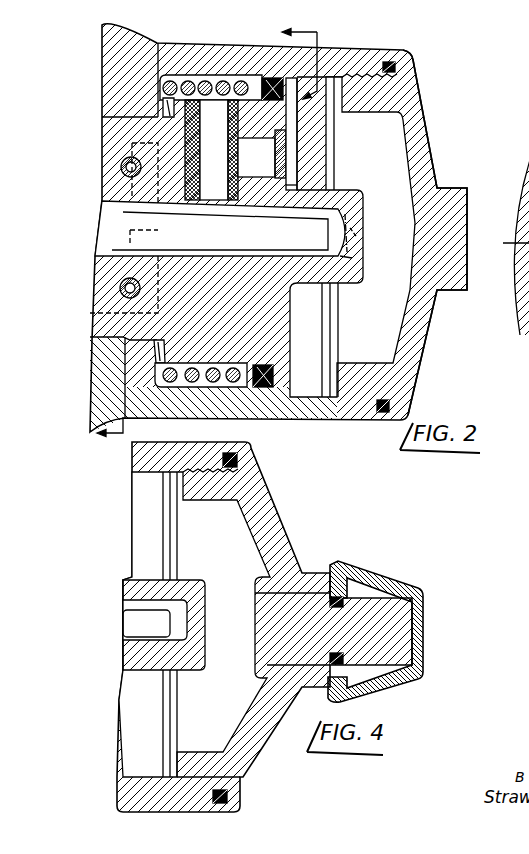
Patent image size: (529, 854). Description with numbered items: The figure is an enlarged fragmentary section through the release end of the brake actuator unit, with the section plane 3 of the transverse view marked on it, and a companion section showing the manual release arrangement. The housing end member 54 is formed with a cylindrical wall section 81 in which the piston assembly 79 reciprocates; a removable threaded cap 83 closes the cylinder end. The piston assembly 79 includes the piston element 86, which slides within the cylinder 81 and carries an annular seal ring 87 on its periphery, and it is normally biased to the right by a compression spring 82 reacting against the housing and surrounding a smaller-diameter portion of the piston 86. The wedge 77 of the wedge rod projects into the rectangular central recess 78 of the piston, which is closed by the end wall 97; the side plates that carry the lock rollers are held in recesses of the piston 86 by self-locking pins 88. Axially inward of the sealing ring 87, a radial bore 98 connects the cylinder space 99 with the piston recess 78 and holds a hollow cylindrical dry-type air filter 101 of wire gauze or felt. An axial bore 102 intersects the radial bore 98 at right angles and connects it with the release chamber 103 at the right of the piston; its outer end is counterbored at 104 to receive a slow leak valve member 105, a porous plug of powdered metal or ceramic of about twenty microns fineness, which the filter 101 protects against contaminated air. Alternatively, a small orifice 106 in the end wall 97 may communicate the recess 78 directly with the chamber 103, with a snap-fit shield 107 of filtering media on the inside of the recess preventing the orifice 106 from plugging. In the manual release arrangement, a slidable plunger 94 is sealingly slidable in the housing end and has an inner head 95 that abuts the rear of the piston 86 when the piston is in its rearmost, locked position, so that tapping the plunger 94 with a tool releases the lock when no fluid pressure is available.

In FIG. 2, the housing end member 54 is at (113, 37).
In FIG. 2, the wedge 77 is at (218, 239).
In FIG. 4, the wedge 77 is at (162, 623).
In FIG. 2, the central recess 78 is at (279, 204).
In FIG. 2, the piston assembly 79 is at (324, 77).
In FIG. 2, the cylindrical wall section 81 is at (193, 49).
In FIG. 4, the cylindrical wall section 81 is at (202, 442).
In FIG. 2, the compression spring 82 is at (223, 81).
In FIG. 2, the threaded cap 83 is at (418, 134).
In FIG. 4, the threaded cap 83 is at (265, 508).
In FIG. 2, the piston element 86 is at (277, 334).
In FIG. 4, the piston element 86 is at (185, 578).
In FIG. 2, the annular seal ring 87 is at (275, 378).
In FIG. 2, the self-locking pins 88 is at (121, 167).
In FIG. 4, the slidable plunger 94 is at (417, 584).
In FIG. 4, the inner head 95 is at (254, 664).
In FIG. 2, the end wall 97 is at (354, 232).
In FIG. 2, the radial bore 98 is at (238, 120).
In FIG. 2, the cylinder space 99 is at (176, 75).
In FIG. 2, the air filter 101 is at (218, 150).
In FIG. 2, the axial bore 102 is at (274, 174).
In FIG. 2, the release chamber 103 is at (312, 302).
In FIG. 2, the counterbore 104 is at (294, 185).
In FIG. 2, the slow leak valve member 105 is at (288, 139).
In FIG. 2, the orifice 106 is at (360, 222).
In FIG. 2, the shield 107 is at (353, 258).
In FIG. 2, the section line 3- 3 is at (212, 230).